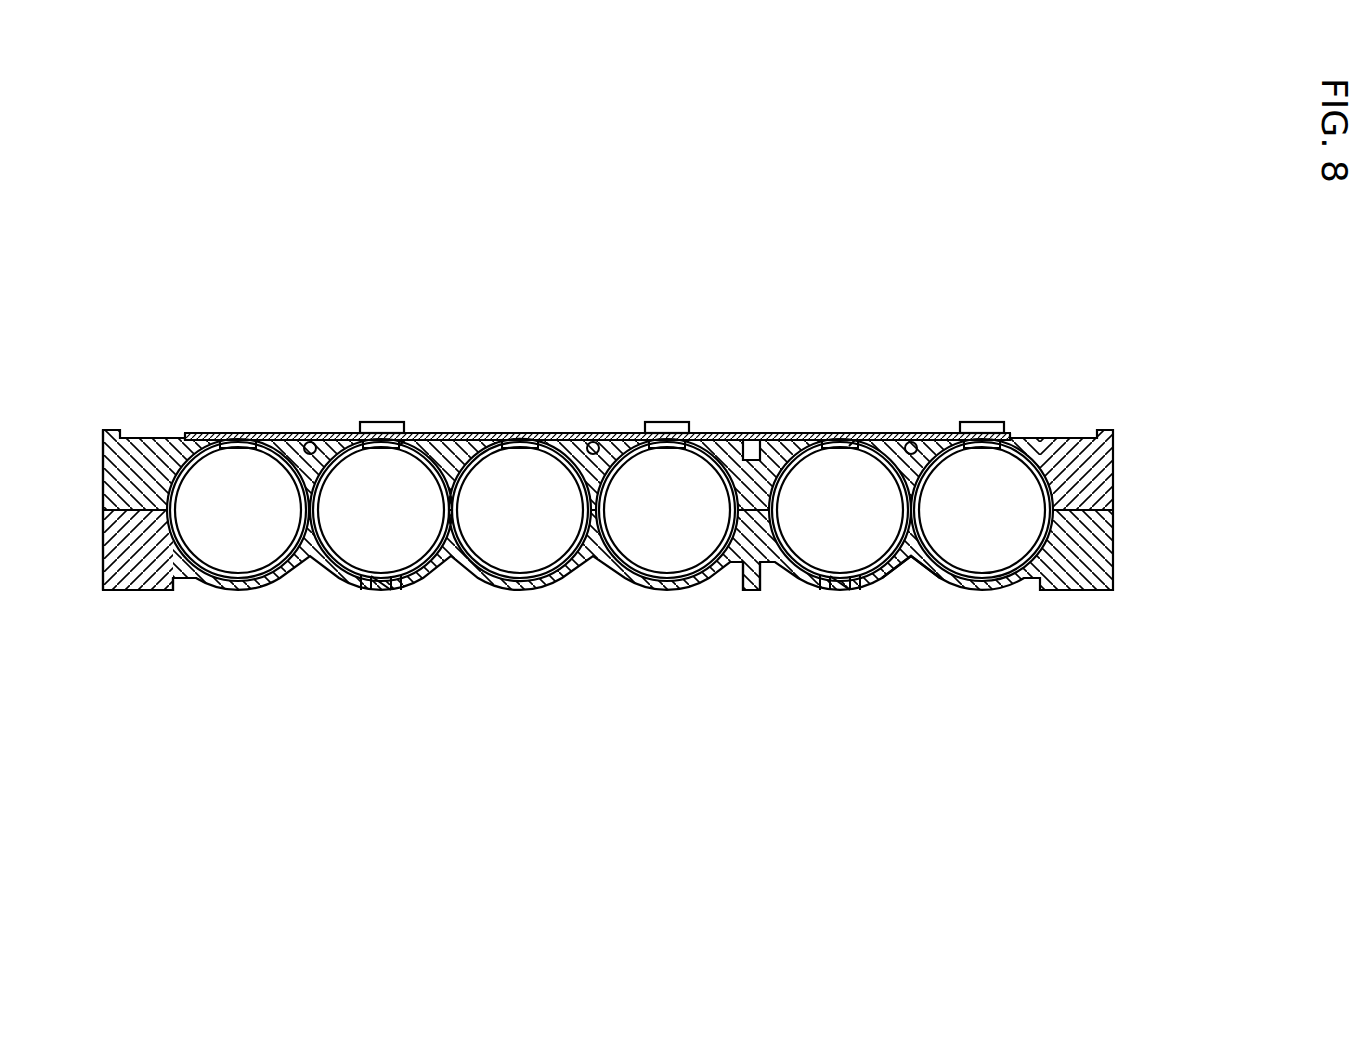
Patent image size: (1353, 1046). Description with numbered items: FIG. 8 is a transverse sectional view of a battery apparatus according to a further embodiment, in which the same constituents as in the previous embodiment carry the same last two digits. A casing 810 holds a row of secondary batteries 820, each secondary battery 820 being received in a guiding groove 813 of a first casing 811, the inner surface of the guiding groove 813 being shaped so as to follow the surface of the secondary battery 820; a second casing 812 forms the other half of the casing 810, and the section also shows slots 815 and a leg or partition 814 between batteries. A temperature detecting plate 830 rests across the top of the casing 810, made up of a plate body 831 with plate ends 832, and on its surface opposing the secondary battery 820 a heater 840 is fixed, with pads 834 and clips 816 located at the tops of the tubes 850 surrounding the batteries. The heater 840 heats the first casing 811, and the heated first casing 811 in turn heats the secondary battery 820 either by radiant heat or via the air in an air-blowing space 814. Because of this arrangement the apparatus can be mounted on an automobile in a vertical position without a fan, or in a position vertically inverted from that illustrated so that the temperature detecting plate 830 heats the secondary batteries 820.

The housing 810 is at (688, 510).
The first casing 811 is at (1140, 490).
The lower housing half 812 is at (1145, 545).
The guiding groove 813 is at (172, 478).
The air-blowing space 814 is at (887, 570).
The slot 815 is at (406, 438).
The clip 816 is at (379, 421).
The secondary battery 820 is at (240, 558).
The temperature detecting plate 830 is at (907, 381).
The cover plate 831 is at (767, 435).
The plate end 832 is at (205, 432).
The pad 834 is at (527, 433).
The heater 840 is at (308, 440).
The tube 850 is at (240, 438).